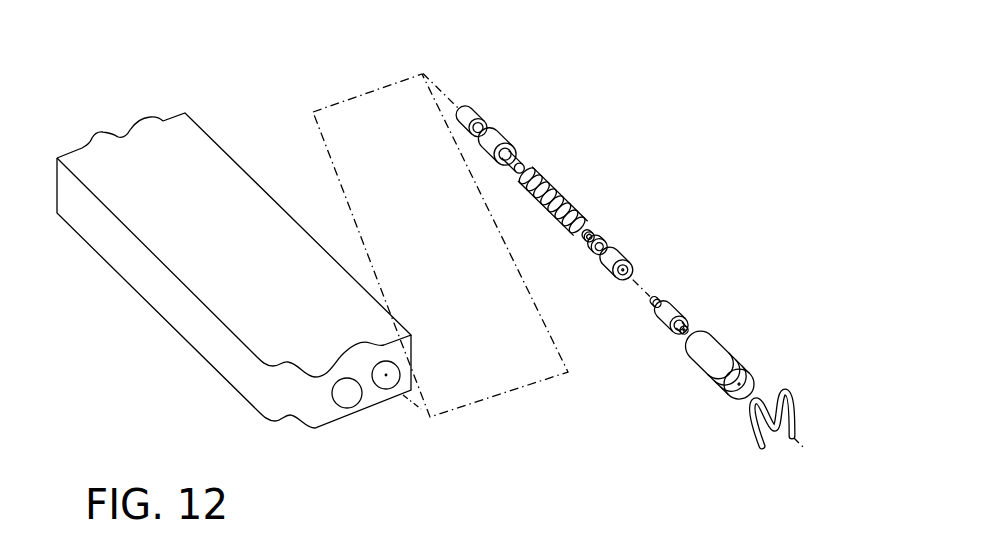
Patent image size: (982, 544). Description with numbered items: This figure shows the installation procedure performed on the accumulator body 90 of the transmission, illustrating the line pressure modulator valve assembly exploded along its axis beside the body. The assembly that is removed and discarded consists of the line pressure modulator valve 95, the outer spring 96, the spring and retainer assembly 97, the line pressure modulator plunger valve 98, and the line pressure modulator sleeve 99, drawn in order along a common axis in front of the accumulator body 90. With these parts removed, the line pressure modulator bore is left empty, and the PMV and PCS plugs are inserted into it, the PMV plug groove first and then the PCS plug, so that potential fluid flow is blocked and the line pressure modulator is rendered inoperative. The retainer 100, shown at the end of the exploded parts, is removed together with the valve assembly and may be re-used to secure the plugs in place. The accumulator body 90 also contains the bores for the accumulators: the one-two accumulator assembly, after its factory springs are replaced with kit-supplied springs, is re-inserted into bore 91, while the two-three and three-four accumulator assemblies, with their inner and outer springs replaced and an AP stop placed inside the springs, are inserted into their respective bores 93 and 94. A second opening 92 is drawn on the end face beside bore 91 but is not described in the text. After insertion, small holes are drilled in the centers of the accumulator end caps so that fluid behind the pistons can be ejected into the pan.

The accumulator body 90 is at (235, 267).
The bore 91 is at (348, 400).
The second bore 92 is at (385, 385).
The bore 93 is at (83, 130).
The bore 94 is at (128, 115).
The line pressure modulator valve 95 is at (491, 140).
The outer spring 96 is at (552, 200).
The spring and retainer assembly 97 is at (607, 254).
The line pressure modulator plunger valve 98 is at (669, 315).
The line pressure modulator sleeve 99 is at (719, 365).
The retainer 100 is at (807, 407).